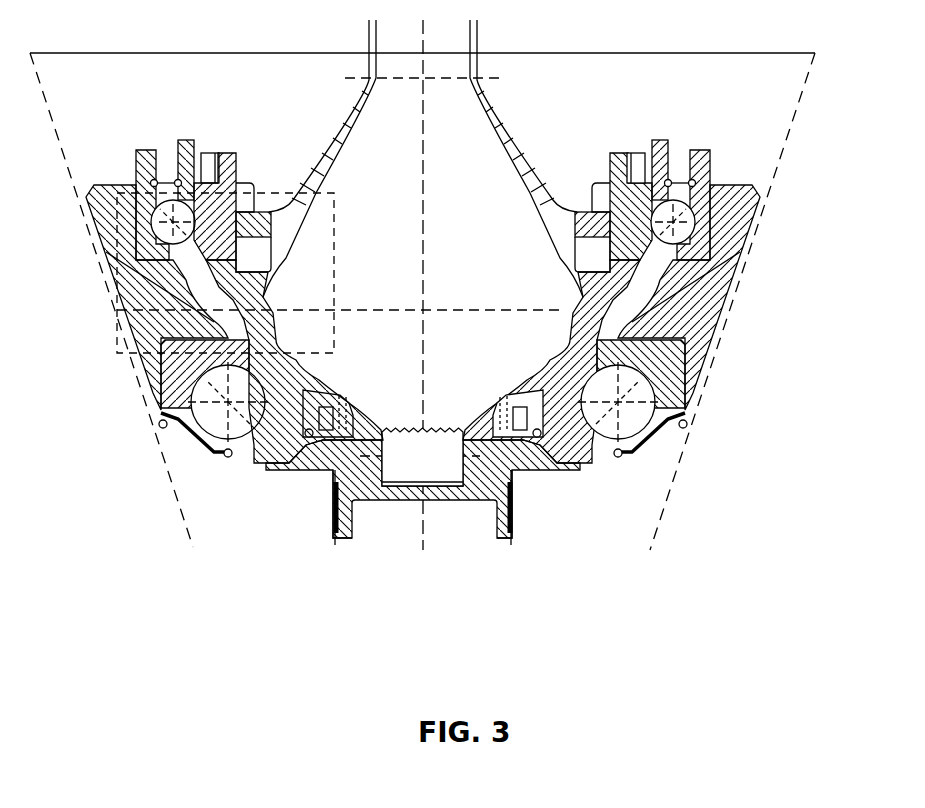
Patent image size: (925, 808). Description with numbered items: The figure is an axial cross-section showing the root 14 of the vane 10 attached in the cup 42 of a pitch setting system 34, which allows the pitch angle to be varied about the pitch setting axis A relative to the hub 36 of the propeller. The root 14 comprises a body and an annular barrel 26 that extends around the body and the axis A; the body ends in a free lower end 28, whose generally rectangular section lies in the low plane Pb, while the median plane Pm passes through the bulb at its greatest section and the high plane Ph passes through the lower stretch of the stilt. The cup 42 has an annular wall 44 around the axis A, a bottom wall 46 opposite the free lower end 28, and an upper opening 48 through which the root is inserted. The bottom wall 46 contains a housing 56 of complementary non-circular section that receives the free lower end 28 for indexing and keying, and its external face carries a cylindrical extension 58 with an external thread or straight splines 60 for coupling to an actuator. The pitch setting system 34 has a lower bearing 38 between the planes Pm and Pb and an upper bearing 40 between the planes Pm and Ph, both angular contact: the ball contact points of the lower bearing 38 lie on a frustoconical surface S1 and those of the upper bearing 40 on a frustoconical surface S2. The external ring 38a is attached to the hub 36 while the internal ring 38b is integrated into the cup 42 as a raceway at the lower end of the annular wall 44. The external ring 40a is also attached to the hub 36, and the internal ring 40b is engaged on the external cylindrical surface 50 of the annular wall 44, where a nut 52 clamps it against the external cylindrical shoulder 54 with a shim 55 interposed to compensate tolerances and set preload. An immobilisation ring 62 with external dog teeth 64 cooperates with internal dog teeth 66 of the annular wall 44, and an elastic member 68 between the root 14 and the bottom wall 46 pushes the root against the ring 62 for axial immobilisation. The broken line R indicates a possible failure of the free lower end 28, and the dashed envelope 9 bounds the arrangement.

The cone envelope line 9 is at (98, 252).
The vane 10 is at (530, 33).
The root 14 is at (529, 111).
The annular barrel 26 is at (553, 362).
The free lower end 28 is at (410, 470).
The pitch setting system 34 is at (705, 306).
The hub 36 is at (107, 203).
The lower bearing 38 is at (686, 403).
The external ring of the lower bearing 38a is at (670, 368).
The internal ring of the lower bearing 38b is at (633, 453).
The upper bearing 40 is at (701, 217).
The external ring of the upper bearing 40a is at (748, 262).
The internal ring of the upper bearing 40b is at (665, 165).
The cup 42 is at (163, 420).
The annular wall 44 is at (259, 346).
The bottom wall 46 is at (327, 462).
The opening 48 is at (237, 157).
The external cylindrical surface 50 is at (165, 182).
The nut 52 is at (632, 163).
The external cylindrical shoulder 54 is at (207, 263).
The shim 55 is at (217, 270).
The housing 56 is at (390, 500).
The cylindrical extension 58 is at (340, 540).
The external thread or external straight splines 60 is at (513, 517).
The immobilisation ring 62 is at (264, 213).
The external dog teeth 64 is at (577, 215).
The internal dog teeth 66 is at (603, 193).
The elastic member 68 is at (570, 473).
The pitch setting axis A is at (430, 532).
The broken line R is at (410, 430).
The high plane Ph is at (350, 74).
The median plane Pm is at (500, 306).
The low plane Pb is at (482, 503).
The frustoconical surface S1 is at (590, 440).
The frustoconical surface S2 is at (688, 180).